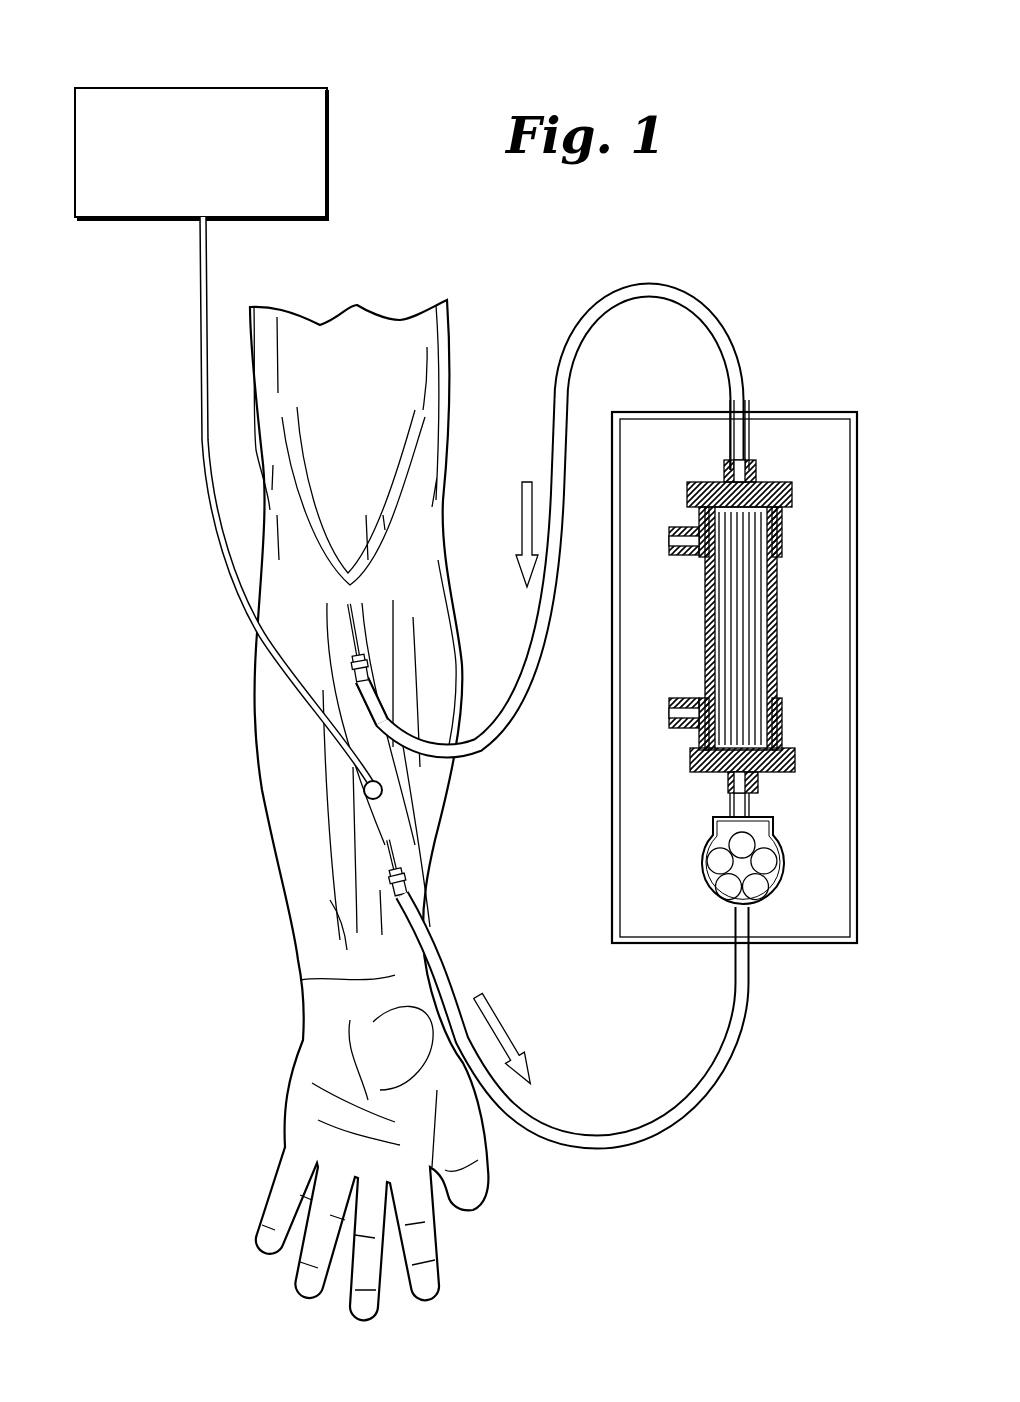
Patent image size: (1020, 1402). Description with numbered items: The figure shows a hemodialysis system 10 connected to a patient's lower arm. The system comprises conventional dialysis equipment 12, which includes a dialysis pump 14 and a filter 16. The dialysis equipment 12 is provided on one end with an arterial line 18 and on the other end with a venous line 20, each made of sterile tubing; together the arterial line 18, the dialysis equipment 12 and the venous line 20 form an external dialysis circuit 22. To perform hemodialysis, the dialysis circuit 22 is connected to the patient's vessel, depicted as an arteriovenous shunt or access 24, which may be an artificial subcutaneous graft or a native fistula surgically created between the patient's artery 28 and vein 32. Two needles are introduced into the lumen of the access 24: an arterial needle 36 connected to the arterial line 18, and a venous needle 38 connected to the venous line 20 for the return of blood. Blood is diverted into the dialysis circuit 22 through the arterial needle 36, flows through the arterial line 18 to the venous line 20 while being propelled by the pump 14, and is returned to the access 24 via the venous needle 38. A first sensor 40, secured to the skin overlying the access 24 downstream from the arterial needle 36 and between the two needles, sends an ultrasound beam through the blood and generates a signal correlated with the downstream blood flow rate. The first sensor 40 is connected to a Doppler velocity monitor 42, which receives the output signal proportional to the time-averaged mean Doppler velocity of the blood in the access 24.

The hemodialysis system 10 is at (187, 925).
The dialysis equipment 12 is at (808, 405).
The dialysis pump 14 is at (778, 897).
The filter 16 is at (771, 627).
The arterial line 18 is at (627, 1150).
The venous line 20 is at (668, 300).
The external dialysis circuit 22 is at (752, 318).
The access 24 is at (365, 820).
The artery 28 is at (393, 770).
The vein 32 is at (345, 910).
The arterial needle 36 is at (383, 858).
The venous needle 38 is at (343, 640).
The first sensor 40 is at (364, 788).
The Doppler velocity monitor 42 is at (212, 88).